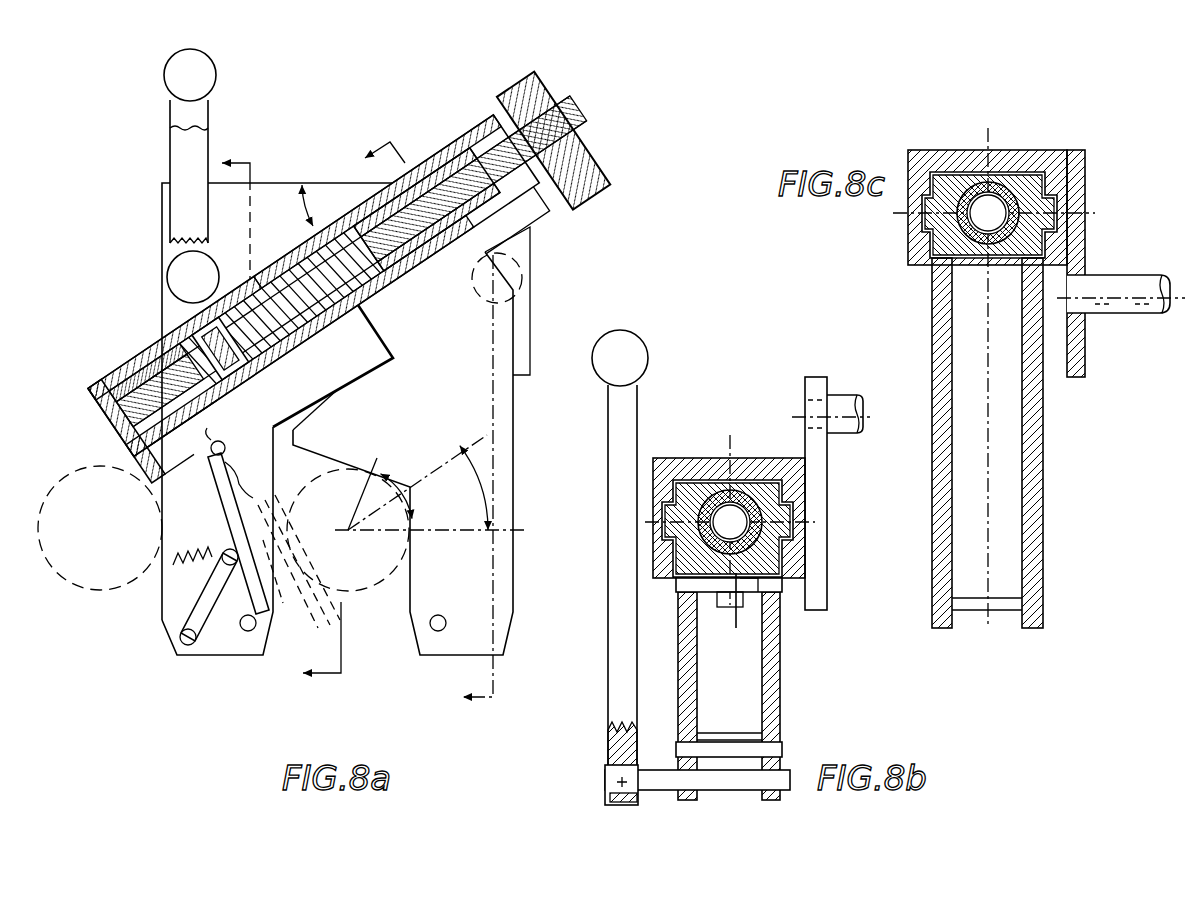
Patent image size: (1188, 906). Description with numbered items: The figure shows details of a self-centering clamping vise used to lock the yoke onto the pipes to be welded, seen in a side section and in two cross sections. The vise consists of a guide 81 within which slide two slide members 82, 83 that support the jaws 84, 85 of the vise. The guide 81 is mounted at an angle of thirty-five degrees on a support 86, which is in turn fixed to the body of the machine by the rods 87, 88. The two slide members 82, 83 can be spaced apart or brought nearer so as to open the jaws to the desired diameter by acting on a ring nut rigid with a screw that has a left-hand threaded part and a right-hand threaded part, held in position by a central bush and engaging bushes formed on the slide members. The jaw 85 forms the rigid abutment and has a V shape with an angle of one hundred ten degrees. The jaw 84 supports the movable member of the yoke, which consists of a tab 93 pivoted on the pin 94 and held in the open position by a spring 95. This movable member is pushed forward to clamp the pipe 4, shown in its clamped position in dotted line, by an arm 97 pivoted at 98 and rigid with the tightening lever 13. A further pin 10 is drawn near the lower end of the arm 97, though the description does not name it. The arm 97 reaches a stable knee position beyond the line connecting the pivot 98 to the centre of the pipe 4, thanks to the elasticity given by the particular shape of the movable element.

In FIG. 8a, the pipe 4 is at (375, 565).
In FIG. 8a, the pivot pin 10 is at (248, 623).
In FIG. 8a, the tightening lever 13 is at (183, 172).
In FIG. 8b, the tightening lever 13 is at (625, 600).
In FIG. 8c, the guide 81 is at (922, 182).
In FIG. 8b, the slide member 82 is at (672, 530).
In FIG. 8b, the slide member 83 is at (727, 528).
In FIG. 8c, the slide member 83 is at (948, 197).
In FIG. 8a, the jaw 84 is at (230, 532).
In FIG. 8b, the jaw 84 is at (690, 635).
In FIG. 8a, the jaw 85 is at (493, 342).
In FIG. 8a, the support 86 is at (267, 193).
In FIG. 8b, the support 86 is at (815, 385).
In FIG. 8c, the support 86 is at (1076, 162).
In FIG. 8a, the rod 87 is at (510, 270).
In FIG. 8c, the rod 87 is at (1128, 307).
In FIG. 8a, the rod 88 is at (188, 270).
In FIG. 8b, the rod 88 is at (842, 427).
In FIG. 8a, the tab 93 is at (330, 653).
In FIG. 8b, the tab 93 is at (740, 705).
In FIG. 8c, the tab 93 is at (987, 604).
In FIG. 8a, the pin 94 is at (207, 453).
In FIG. 8b, the pin 94 is at (770, 587).
In FIG. 8a, the spring 95 is at (247, 497).
In FIG. 8b, the spring 95 is at (738, 620).
In FIG. 8a, the arm 97 is at (217, 590).
In FIG. 8a, the pivot 98 is at (188, 637).
In FIG. 8b, the pivot 98 is at (620, 785).